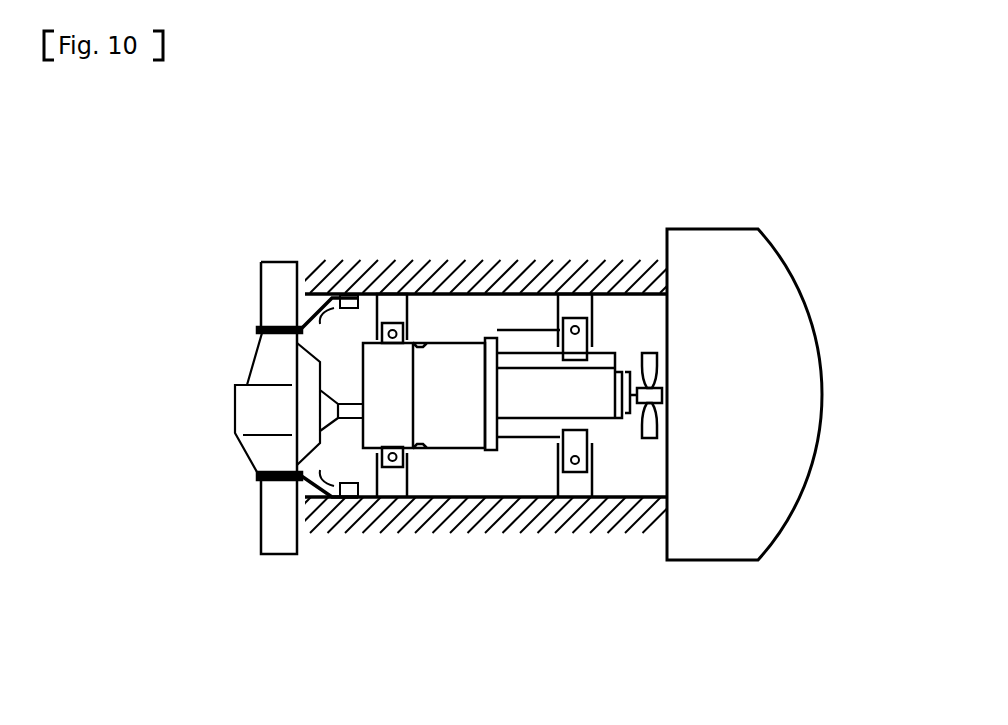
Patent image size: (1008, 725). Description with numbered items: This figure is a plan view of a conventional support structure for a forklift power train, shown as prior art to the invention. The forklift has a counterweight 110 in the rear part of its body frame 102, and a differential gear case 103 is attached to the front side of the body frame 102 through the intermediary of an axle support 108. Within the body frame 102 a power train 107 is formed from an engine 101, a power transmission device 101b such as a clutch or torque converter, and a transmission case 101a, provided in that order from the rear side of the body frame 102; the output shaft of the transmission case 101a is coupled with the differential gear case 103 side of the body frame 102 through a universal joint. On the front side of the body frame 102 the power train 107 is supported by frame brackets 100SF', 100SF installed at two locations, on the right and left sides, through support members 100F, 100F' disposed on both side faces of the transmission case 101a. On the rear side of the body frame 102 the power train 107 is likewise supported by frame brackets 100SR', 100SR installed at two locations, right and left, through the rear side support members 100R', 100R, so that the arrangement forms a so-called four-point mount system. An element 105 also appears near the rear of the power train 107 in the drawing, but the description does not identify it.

The support member 100F is at (373, 278).
The support member 100F' is at (378, 524).
The rear side support member 100R is at (571, 283).
The rear side support member 100R' is at (574, 513).
The frame bracket 100SF is at (415, 248).
The frame bracket 100SF' is at (425, 546).
The frame bracket 100SR is at (659, 320).
The frame bracket 100SR' is at (662, 470).
The engine 101 is at (512, 380).
The transmission case 101a is at (377, 372).
The power transmission device 101b is at (447, 357).
The body frame 102 is at (625, 273).
The differential gear case 103 is at (275, 412).
The cooling fan 105 is at (655, 366).
The power train 107 is at (522, 444).
The axle support 108 is at (333, 300).
The counterweight 110 is at (765, 273).